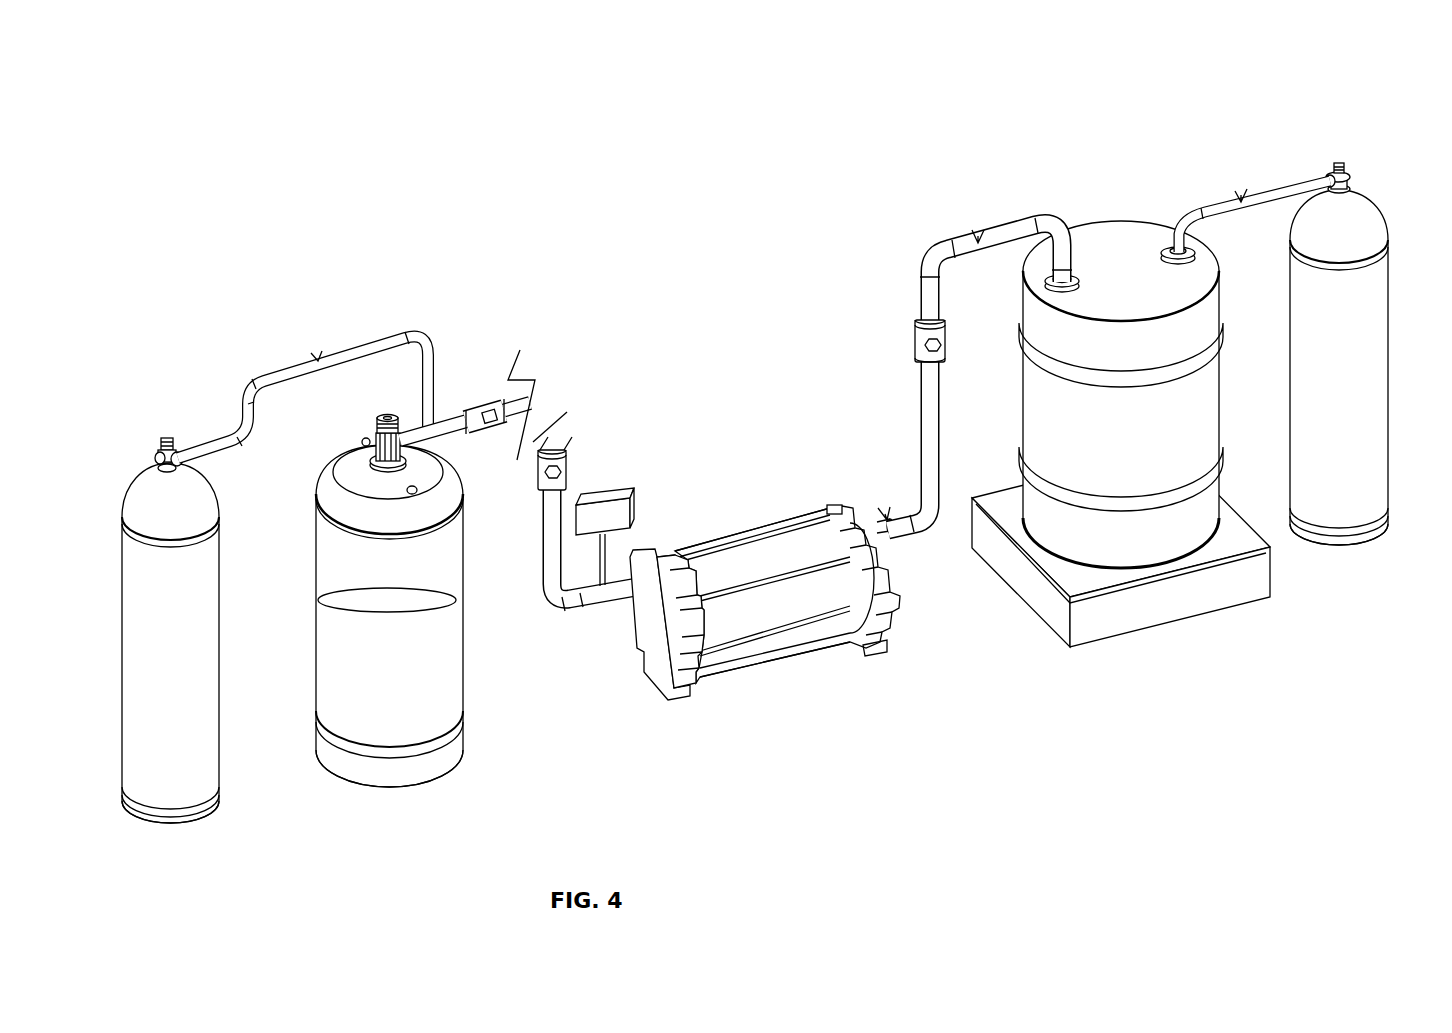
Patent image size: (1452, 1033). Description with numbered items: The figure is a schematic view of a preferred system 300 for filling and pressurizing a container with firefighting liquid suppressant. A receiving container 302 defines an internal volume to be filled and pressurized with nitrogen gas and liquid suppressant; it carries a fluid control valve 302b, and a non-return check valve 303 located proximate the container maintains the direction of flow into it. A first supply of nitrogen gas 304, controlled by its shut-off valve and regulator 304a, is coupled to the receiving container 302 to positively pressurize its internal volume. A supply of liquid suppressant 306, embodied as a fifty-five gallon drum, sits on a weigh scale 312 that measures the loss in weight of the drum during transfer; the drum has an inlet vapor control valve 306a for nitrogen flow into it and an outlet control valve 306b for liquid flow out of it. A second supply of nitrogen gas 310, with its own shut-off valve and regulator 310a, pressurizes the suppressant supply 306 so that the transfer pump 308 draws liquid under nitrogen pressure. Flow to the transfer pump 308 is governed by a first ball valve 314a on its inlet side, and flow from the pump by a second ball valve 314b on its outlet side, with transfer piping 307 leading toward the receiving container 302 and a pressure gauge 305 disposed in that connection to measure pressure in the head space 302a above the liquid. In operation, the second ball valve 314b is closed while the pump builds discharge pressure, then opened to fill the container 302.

The system 300 is at (814, 231).
The receiving container 302 is at (424, 634).
The head space 302a is at (387, 586).
The valve 302b is at (387, 415).
The check valve 303 is at (487, 404).
The supply of nitrogen gas 304 is at (152, 494).
The shut-off valve and regulator 304a is at (164, 438).
The pressure gauge 305 is at (605, 500).
The supply of liquid suppressant 306 is at (1106, 308).
The inlet vapor control valve 306a is at (1166, 250).
The outlet control valve 306b is at (1071, 278).
The transfer piping 307 is at (618, 601).
The transfer pump 308 is at (745, 563).
The second supply of nitrogen gas 310 is at (1362, 231).
The shut-off valve and regulator 310a is at (1333, 162).
The weigh scale 312 is at (1190, 600).
The first ball valve 314a is at (913, 336).
The second ball valve 314b is at (554, 452).